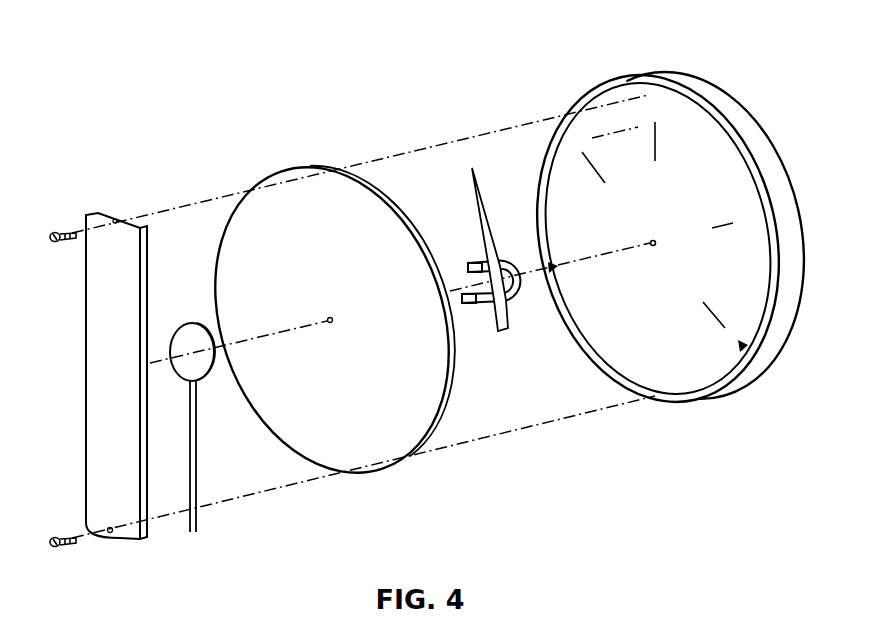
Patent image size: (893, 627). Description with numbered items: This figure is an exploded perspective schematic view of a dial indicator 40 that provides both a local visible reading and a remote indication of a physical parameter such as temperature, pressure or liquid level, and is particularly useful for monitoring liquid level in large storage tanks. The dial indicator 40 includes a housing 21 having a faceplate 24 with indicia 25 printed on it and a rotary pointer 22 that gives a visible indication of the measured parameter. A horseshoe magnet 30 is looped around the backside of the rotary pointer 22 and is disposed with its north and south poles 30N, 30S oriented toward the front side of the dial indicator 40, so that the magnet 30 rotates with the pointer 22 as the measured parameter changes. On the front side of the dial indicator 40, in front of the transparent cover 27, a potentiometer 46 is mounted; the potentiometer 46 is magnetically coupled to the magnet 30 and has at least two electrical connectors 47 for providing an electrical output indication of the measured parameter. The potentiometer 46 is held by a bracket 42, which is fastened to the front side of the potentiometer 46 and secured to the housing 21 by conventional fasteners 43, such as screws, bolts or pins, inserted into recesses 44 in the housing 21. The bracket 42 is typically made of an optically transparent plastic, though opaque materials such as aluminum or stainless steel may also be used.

The dial indicator 40 is at (370, 76).
The housing 21 is at (757, 376).
The rotary pointer 22 is at (479, 192).
The faceplate 24 is at (668, 328).
The indicia 25 is at (729, 222).
The transparent cover 27 is at (280, 178).
The horseshoe magnet 30 is at (522, 300).
The north pole 30N is at (468, 266).
The south pole 30S is at (480, 305).
The bracket 42 is at (103, 362).
The fasteners 43 is at (62, 230).
The recesses 44 is at (650, 78).
The potentiometer 46 is at (183, 340).
The electrical connectors 47 is at (200, 476).